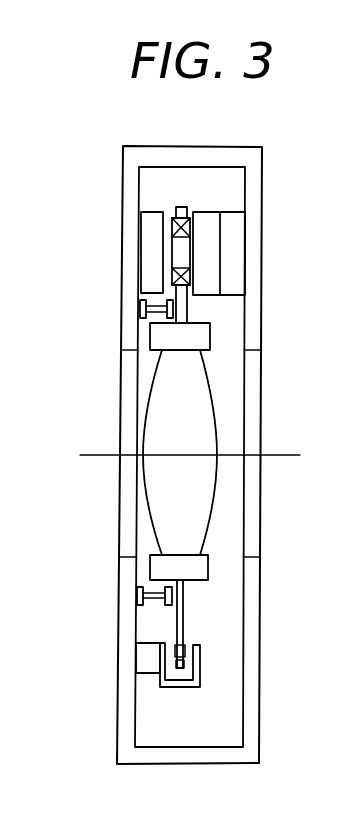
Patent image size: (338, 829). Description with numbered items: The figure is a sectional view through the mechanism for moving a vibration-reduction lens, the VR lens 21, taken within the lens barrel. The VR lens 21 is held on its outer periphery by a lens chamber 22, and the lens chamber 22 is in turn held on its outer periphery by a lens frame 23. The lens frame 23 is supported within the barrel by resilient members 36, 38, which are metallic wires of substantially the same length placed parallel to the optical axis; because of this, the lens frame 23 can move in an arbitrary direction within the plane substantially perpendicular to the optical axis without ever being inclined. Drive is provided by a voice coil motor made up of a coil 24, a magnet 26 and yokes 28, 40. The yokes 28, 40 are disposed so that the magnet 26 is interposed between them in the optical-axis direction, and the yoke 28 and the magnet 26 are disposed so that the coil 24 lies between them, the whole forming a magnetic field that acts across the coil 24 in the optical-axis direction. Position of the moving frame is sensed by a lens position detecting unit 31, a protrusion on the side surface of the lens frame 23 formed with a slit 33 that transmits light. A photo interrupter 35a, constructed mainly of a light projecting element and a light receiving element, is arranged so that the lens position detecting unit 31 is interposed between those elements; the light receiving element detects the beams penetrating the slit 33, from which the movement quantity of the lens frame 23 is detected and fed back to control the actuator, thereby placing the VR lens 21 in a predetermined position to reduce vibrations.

The VR lens 21 is at (155, 517).
The lens chamber 22 is at (150, 568).
The lens frame 23 is at (178, 620).
The coil 24 is at (190, 215).
The magnet 26 is at (220, 231).
The yoke 28 is at (142, 233).
The lens position detecting unit 31 is at (187, 647).
The slit 33 is at (194, 665).
The photo interrupter 35a is at (200, 670).
The resilient member 36 is at (140, 318).
The resilient member 38 is at (150, 603).
The yoke 40 is at (233, 275).